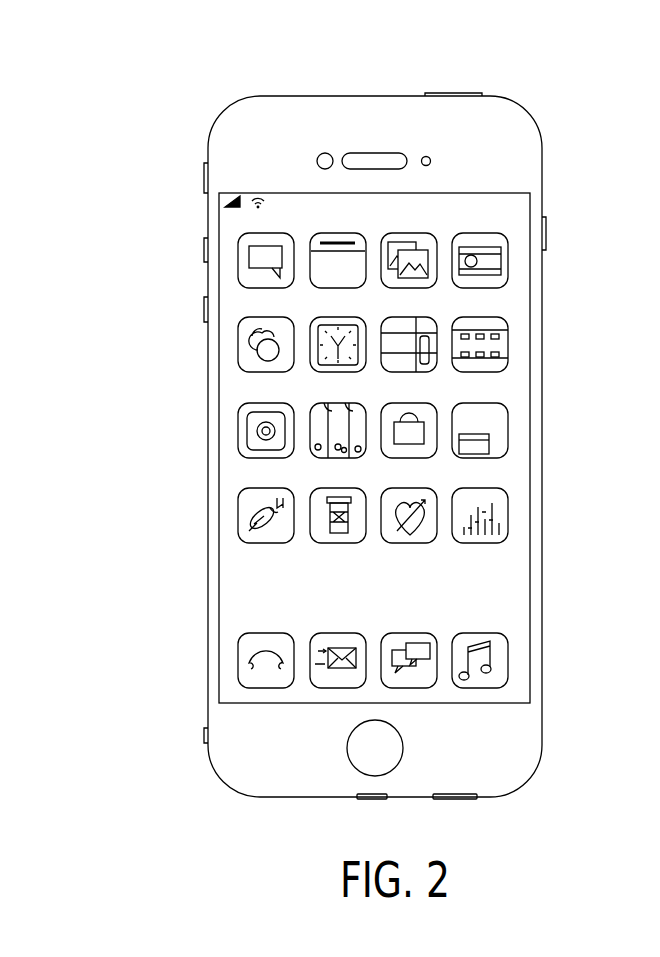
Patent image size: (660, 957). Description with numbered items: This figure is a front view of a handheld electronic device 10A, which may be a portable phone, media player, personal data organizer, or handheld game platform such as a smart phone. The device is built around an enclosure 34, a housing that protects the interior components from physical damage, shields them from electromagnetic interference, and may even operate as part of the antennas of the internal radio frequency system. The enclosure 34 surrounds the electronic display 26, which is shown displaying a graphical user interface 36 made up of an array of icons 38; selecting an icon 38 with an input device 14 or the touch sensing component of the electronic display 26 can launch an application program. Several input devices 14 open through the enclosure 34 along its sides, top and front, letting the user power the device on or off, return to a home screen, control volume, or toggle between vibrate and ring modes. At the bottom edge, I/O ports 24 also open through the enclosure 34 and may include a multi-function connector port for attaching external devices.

The handheld electronic device 10A is at (199, 85).
The input devices 14 is at (450, 93).
The I/O ports 24 is at (262, 797).
The electronic display 26 is at (531, 573).
The enclosure 34 is at (543, 181).
The graphical user interface 36 is at (419, 460).
The icon 38 is at (410, 545).